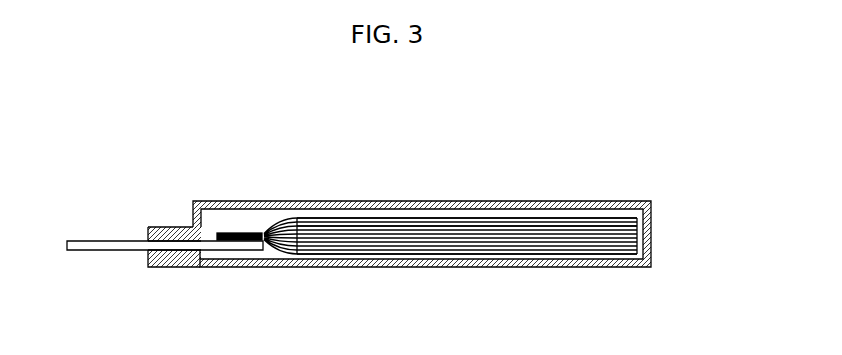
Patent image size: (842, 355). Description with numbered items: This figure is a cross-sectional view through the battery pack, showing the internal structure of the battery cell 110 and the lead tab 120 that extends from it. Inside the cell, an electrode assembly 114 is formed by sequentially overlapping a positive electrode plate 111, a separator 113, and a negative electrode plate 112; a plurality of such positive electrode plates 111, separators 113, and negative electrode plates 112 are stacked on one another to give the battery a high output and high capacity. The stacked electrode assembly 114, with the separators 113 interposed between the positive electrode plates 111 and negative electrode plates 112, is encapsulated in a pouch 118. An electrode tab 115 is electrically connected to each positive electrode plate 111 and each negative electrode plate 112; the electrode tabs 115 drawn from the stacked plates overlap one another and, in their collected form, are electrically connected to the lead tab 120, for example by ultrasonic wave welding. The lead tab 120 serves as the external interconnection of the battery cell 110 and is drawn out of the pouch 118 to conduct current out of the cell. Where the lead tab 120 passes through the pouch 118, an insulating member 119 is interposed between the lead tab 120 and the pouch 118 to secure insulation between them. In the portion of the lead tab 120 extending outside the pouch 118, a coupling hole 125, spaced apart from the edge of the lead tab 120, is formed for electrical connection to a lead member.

The battery cell 110 is at (517, 192).
The positive electrode plate 111 is at (638, 219).
The negative electrode plate 112 is at (500, 241).
The separator 113 is at (638, 226).
The electrode assembly 114 is at (542, 219).
The electrode tab 115 is at (282, 222).
The pouch 118 is at (594, 202).
The insulating member 119 is at (158, 268).
The lead tab 120 is at (80, 251).
The coupling hole 125 is at (98, 250).